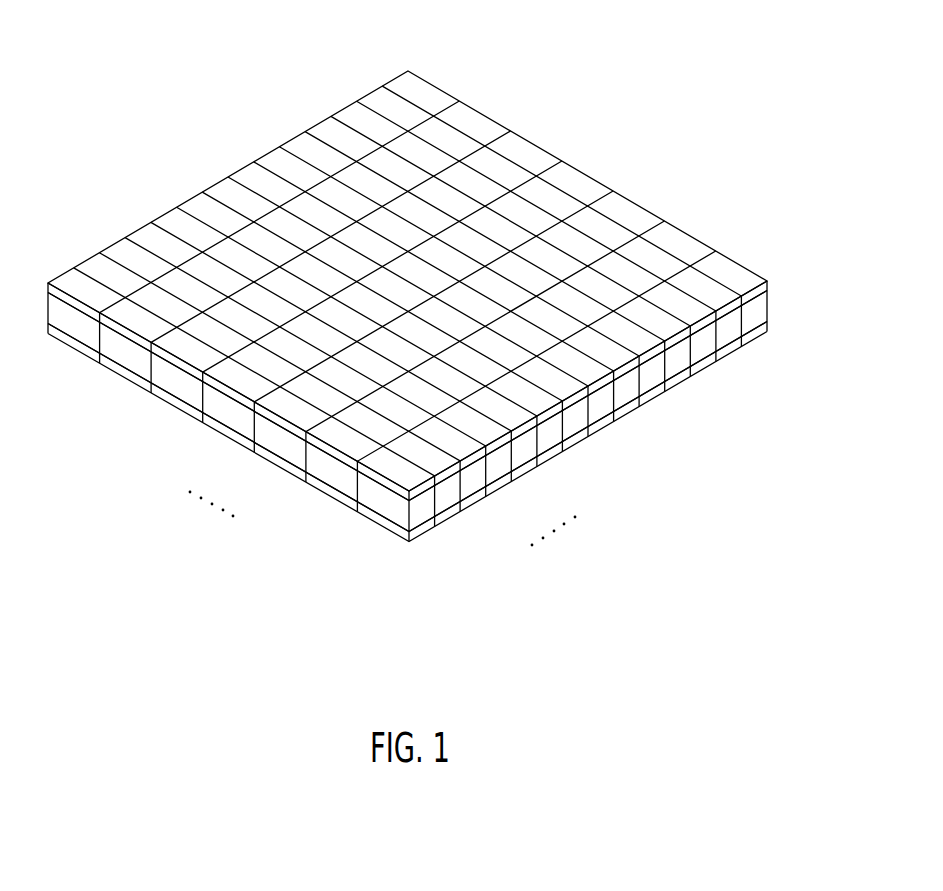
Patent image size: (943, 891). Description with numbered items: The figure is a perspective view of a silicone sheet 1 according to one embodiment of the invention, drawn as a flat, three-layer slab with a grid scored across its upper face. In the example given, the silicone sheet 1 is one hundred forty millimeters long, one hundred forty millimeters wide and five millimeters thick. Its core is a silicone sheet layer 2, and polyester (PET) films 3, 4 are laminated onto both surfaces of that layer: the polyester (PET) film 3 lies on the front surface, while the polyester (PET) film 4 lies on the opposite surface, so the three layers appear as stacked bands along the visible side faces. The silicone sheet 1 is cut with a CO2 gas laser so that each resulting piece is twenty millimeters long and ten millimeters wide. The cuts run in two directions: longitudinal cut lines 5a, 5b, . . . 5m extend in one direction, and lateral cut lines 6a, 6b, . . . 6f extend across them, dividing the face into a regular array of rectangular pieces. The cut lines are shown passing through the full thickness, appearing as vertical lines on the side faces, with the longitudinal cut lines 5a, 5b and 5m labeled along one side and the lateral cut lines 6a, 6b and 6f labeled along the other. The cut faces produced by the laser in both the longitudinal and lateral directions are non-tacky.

The silicone sheet 1 is at (520, 86).
The silicone sheet layer 2 is at (771, 309).
The polyester (PET) film 3 is at (771, 284).
The polyester (PET) film 4 is at (770, 330).
The longitudinal cut line 5a is at (435, 528).
The longitudinal cut line 5b is at (460, 513).
The longitudinal cut line 5m is at (741, 348).
The lateral cut line 6a is at (357, 514).
The lateral cut line 6b is at (306, 484).
The lateral cut line 6f is at (100, 366).